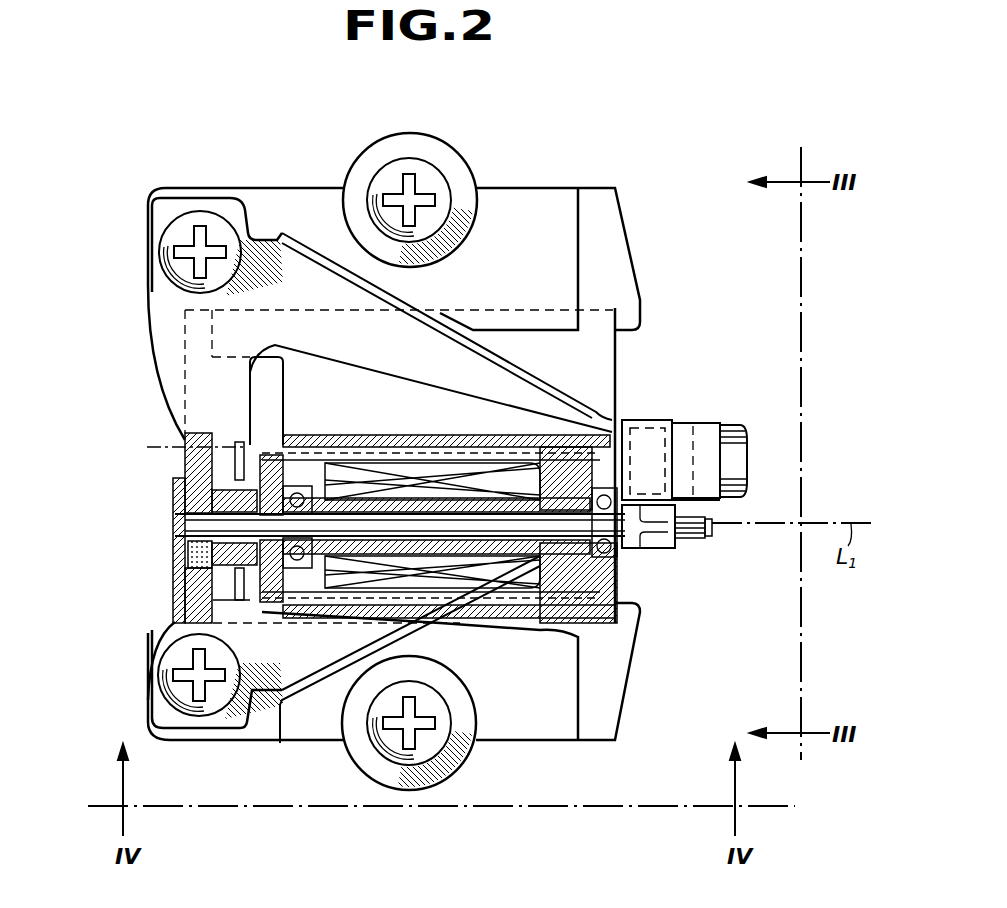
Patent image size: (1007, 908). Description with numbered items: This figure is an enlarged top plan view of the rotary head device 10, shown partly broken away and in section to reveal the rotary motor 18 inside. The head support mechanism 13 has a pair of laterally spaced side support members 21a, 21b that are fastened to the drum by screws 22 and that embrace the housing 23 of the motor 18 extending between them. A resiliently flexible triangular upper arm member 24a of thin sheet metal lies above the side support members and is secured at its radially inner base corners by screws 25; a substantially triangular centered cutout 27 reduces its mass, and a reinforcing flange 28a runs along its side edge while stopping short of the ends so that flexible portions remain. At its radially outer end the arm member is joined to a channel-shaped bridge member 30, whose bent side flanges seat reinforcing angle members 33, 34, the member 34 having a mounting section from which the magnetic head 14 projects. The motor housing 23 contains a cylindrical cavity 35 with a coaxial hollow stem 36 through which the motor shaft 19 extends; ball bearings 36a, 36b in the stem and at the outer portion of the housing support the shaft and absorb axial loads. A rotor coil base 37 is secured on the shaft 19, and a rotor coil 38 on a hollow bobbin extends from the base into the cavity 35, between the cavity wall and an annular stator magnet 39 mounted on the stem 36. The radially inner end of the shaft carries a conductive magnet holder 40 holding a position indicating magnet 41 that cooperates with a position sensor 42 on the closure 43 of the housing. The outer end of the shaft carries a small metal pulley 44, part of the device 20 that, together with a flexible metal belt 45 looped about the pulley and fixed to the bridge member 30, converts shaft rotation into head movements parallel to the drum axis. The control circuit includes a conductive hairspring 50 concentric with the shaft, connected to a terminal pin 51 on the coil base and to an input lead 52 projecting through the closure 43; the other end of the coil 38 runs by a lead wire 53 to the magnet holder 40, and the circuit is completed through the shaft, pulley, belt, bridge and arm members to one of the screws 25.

The motor assembly 10 is at (514, 164).
The head support mechanism 13 is at (270, 183).
The screws 22 is at (425, 180).
The screws 25 is at (180, 238).
The side support member 21a is at (704, 218).
The side support member 21b is at (610, 690).
The reinforcing flange 28a is at (575, 365).
The upper arm member 24a is at (547, 373).
The cutout 27 is at (320, 365).
The cylindrical cavity 35 is at (325, 435).
The hollow stem 36 is at (438, 480).
The ball bearing 36a is at (307, 590).
The ball bearing 36b is at (627, 592).
The motor shaft 19 is at (380, 520).
The position sensor 42 is at (185, 520).
The closure 43 is at (188, 602).
The position indicating magnet 41 is at (188, 553).
The magnet holder 40 is at (173, 490).
The lead wire 53 is at (183, 470).
The terminal or pin 51 is at (183, 587).
The input terminal or lead 52 is at (167, 443).
The conductive hairspring 50 is at (213, 600).
The rotor coil base 37 is at (265, 590).
The motor housing 23 is at (603, 600).
The metal pulley 44 is at (640, 520).
The rotary motor 18 is at (627, 568).
The rotor coil 38 is at (517, 615).
The annular stator magnet 39 is at (540, 615).
The bridge member 30 is at (658, 412).
The reinforcing angle member 33 is at (637, 430).
The magnetic head 14 is at (735, 452).
The reinforcing angle member 34 is at (717, 503).
The device for converting rotation 20 is at (700, 553).
The flexible metal belt 45 is at (700, 537).